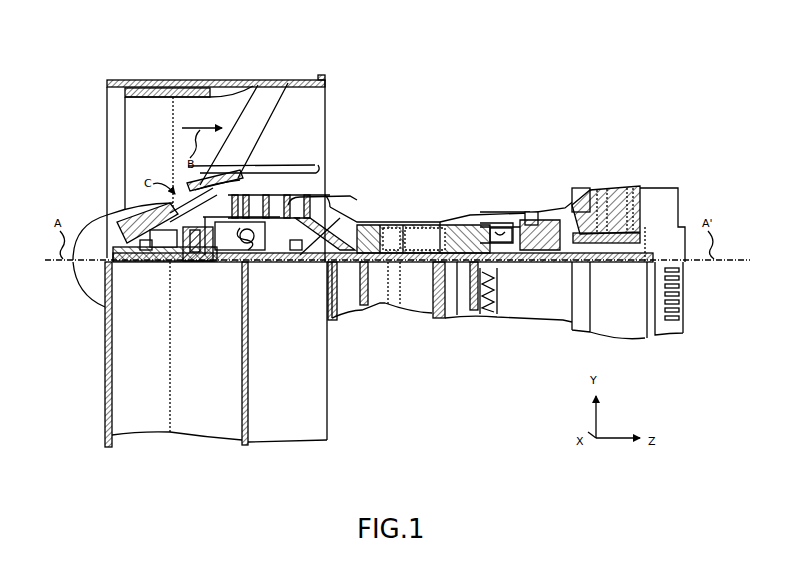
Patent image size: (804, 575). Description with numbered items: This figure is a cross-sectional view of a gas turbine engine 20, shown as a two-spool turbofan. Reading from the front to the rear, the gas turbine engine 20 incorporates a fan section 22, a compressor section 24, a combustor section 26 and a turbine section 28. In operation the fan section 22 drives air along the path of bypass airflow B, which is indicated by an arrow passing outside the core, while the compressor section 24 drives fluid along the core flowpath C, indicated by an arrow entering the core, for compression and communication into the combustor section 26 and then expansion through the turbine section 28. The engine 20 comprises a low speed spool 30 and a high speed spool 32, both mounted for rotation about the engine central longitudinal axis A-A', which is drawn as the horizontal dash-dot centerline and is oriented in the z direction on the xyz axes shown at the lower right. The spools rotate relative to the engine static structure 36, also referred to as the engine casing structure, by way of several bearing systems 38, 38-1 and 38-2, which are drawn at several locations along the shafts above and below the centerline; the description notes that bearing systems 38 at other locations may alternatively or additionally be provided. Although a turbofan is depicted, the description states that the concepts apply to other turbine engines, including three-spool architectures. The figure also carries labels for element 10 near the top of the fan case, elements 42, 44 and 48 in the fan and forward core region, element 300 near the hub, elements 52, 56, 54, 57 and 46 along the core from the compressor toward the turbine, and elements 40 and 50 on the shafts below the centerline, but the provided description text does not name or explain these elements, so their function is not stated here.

The gas turbine engine 20 is at (523, 75).
The fan section 22 is at (230, 71).
The nacelle 10 is at (268, 82).
The compressor section 24 is at (462, 144).
The combustor section 26 is at (522, 144).
The turbine section 28 is at (648, 144).
The fan 42 is at (180, 195).
The low pressure compressor 44 is at (330, 193).
The low pressure turbine 46 is at (608, 192).
The geared architecture 48 is at (214, 284).
The fan drive gear system 300 is at (278, 261).
The bearing system 38-1 is at (152, 262).
The bearing system 38-2 is at (303, 261).
The high pressure compressor 52 is at (425, 222).
The high speed spool 32 is at (457, 235).
The combustor 56 is at (488, 222).
The high pressure turbine 54 is at (536, 213).
The mid-turbine frame 57 is at (561, 232).
The low speed spool 30 is at (425, 268).
The inner shaft 40 is at (344, 268).
The engine static structure 36 is at (448, 303).
The outer shaft 50 is at (499, 263).
The bearing system 38 is at (558, 263).